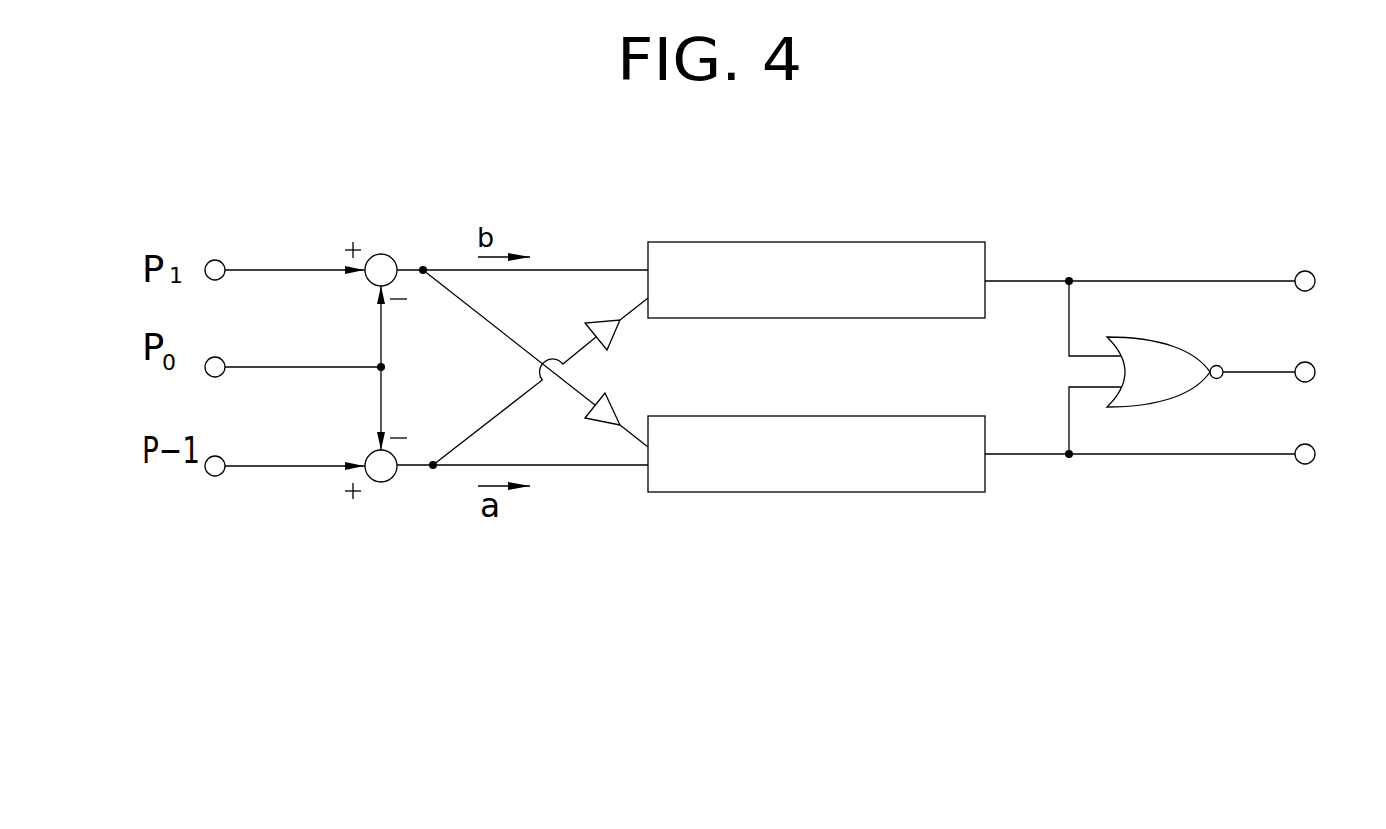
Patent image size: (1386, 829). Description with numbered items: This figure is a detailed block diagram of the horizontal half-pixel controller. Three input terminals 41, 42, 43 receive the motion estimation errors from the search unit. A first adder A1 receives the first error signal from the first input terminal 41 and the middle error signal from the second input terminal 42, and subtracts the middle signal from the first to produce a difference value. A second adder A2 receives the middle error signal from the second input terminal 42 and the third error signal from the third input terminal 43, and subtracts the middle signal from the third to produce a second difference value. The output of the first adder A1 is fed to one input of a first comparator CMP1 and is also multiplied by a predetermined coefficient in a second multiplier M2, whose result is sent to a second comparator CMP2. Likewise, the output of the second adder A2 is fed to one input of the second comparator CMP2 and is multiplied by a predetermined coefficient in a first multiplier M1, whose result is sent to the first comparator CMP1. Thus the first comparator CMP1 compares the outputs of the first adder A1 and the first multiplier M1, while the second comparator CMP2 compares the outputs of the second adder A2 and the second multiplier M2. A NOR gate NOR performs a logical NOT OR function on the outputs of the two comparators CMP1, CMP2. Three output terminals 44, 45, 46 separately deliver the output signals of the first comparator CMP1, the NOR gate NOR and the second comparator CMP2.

The first input terminal 41 is at (221, 261).
The second input terminal 42 is at (221, 358).
The third input terminal 43 is at (221, 457).
The output terminal 44 is at (1313, 273).
The output terminal 45 is at (1313, 364).
The output terminal 46 is at (1313, 446).
The first adder A1 is at (382, 254).
The second adder A2 is at (376, 483).
The first multiplier M1 is at (576, 322).
The second multiplier M2 is at (623, 395).
The first comparator CMP1 is at (985, 253).
The second comparator CMP2 is at (985, 487).
The NOR gate NOR is at (1193, 347).